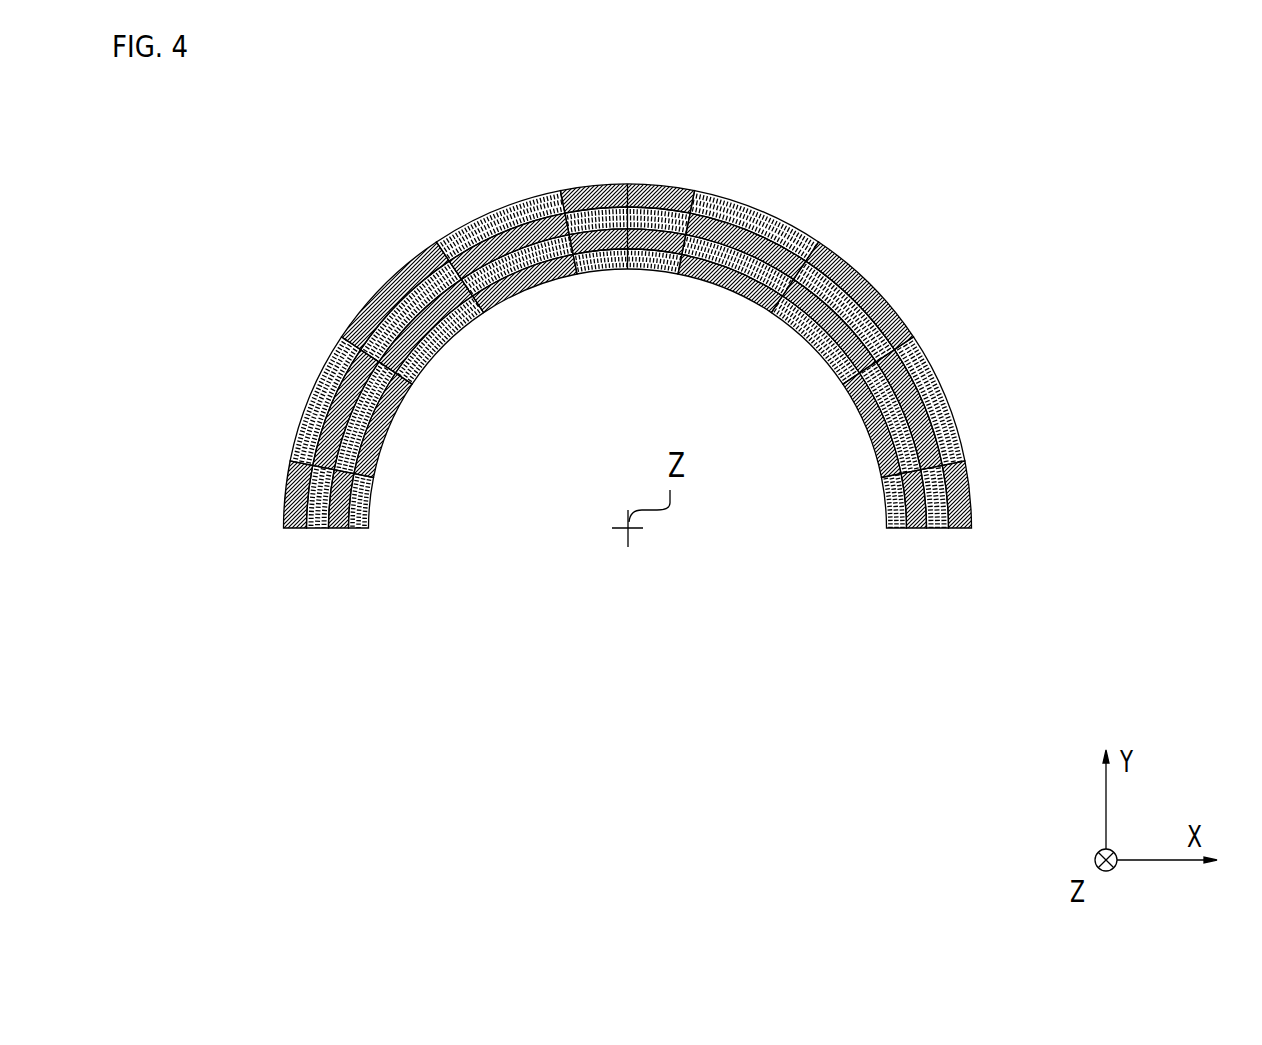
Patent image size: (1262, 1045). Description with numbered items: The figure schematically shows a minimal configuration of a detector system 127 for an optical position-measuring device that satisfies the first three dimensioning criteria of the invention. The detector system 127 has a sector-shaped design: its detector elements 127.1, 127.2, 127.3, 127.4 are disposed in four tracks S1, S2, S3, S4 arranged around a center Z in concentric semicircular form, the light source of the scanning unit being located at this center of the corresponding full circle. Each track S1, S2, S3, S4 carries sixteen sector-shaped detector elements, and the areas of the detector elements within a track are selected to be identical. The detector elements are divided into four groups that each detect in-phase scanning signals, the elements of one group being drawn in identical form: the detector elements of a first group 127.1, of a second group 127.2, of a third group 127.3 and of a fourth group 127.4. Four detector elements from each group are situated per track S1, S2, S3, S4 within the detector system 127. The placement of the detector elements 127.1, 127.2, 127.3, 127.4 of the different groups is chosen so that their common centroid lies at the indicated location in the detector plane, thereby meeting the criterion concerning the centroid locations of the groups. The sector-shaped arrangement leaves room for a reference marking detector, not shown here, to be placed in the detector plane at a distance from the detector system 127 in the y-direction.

The detector system 127 is at (593, 467).
The detector elements of a first group 127.1 is at (282, 503).
The detector elements of a second group 127.2 is at (307, 529).
The detector elements of a third group 127.3 is at (332, 529).
The detector elements of a fourth group 127.4 is at (355, 529).
The first track S1 is at (963, 537).
The second track S2 is at (942, 537).
The third track S3 is at (920, 537).
The fourth track S4 is at (898, 537).